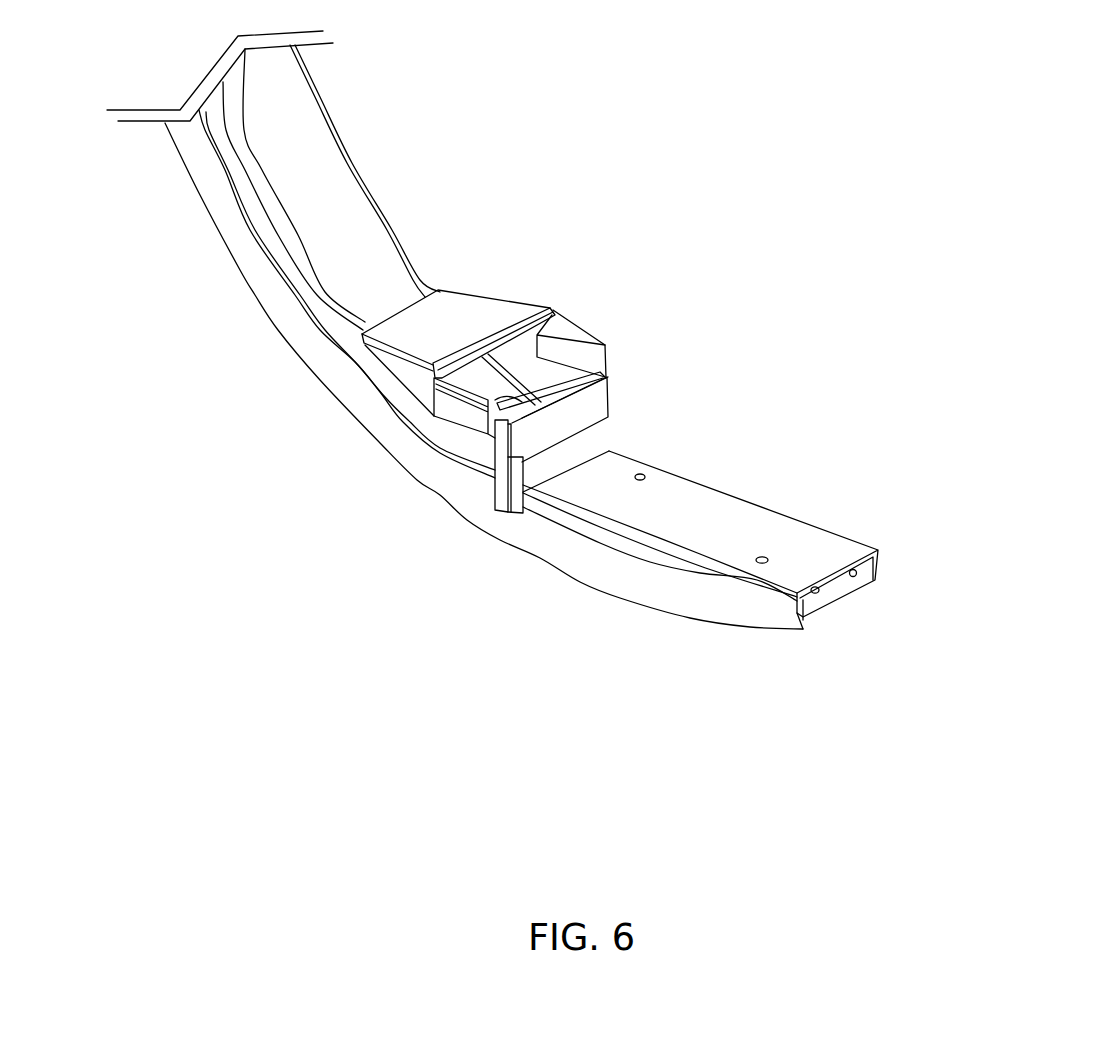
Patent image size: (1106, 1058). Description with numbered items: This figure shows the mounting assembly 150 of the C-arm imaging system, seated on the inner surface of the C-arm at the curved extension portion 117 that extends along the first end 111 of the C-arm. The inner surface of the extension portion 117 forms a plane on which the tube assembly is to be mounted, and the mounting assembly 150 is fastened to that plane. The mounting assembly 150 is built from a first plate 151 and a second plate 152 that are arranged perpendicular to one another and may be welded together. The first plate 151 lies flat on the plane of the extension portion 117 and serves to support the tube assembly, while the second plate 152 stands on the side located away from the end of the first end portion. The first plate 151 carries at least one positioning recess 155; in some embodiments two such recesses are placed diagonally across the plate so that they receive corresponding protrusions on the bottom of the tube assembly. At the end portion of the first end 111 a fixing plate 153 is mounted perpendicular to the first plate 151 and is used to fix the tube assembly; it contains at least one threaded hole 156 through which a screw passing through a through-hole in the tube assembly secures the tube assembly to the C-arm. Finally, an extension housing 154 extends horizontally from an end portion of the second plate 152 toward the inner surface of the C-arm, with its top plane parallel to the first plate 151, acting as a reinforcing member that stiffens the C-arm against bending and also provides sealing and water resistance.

The first end 111 is at (925, 558).
The extension portion 117 is at (632, 582).
The mounting assembly 150 is at (740, 205).
The first plate 151 is at (735, 517).
The second plate 152 is at (587, 440).
The fixing plate 153 is at (837, 588).
The extension housing 154 is at (462, 323).
The positioning recess 155 is at (645, 477).
The threaded hole 156 is at (856, 577).